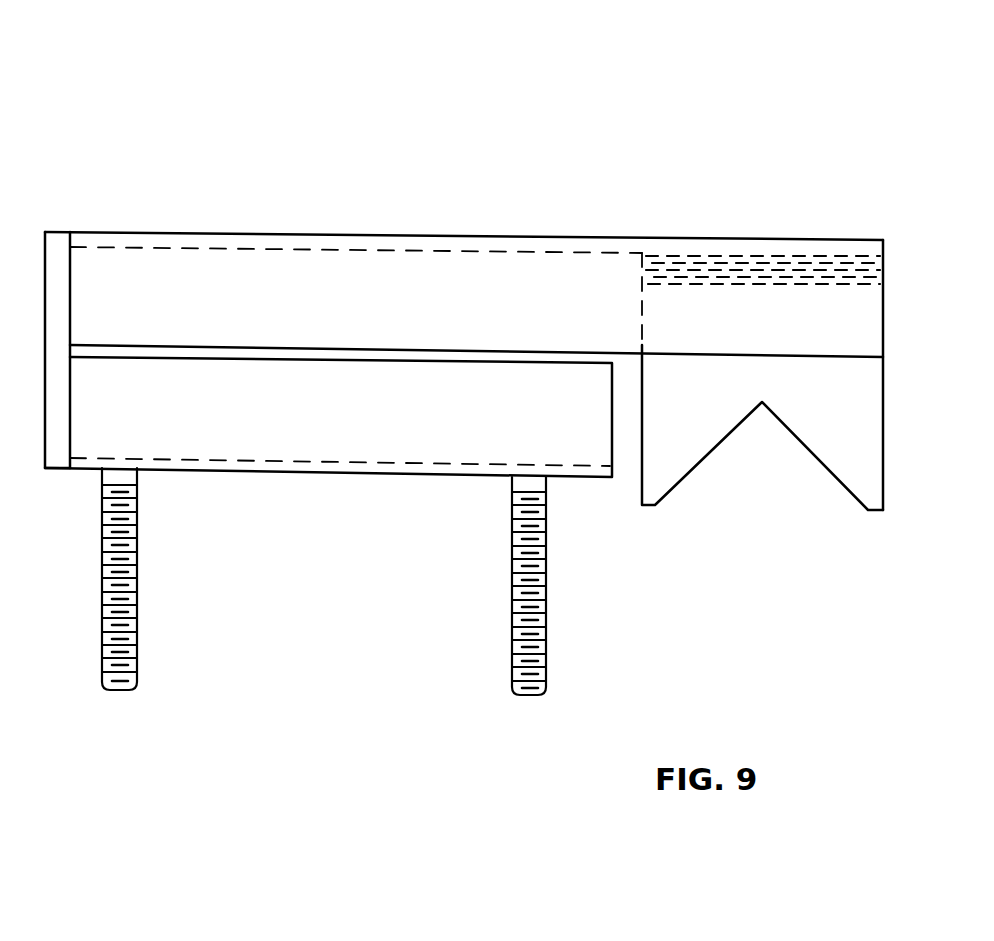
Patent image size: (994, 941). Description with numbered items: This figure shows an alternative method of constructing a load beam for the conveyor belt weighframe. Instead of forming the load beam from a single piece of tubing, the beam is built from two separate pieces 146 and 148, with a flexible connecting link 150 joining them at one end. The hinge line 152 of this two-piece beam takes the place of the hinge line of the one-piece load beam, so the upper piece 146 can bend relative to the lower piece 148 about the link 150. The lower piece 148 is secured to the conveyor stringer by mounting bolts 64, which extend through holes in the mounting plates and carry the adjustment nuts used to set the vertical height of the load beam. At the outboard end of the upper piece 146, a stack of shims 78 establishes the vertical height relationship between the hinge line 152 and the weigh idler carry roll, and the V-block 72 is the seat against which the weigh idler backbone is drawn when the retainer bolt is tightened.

The mounting bolts 64 is at (505, 648).
The V-block 72 is at (668, 427).
The shims 78 is at (703, 265).
The upper load beam piece 146 is at (312, 285).
The lower load beam piece 148 is at (288, 413).
The flexible connecting link 150 is at (113, 155).
The hinge line 152 is at (43, 353).